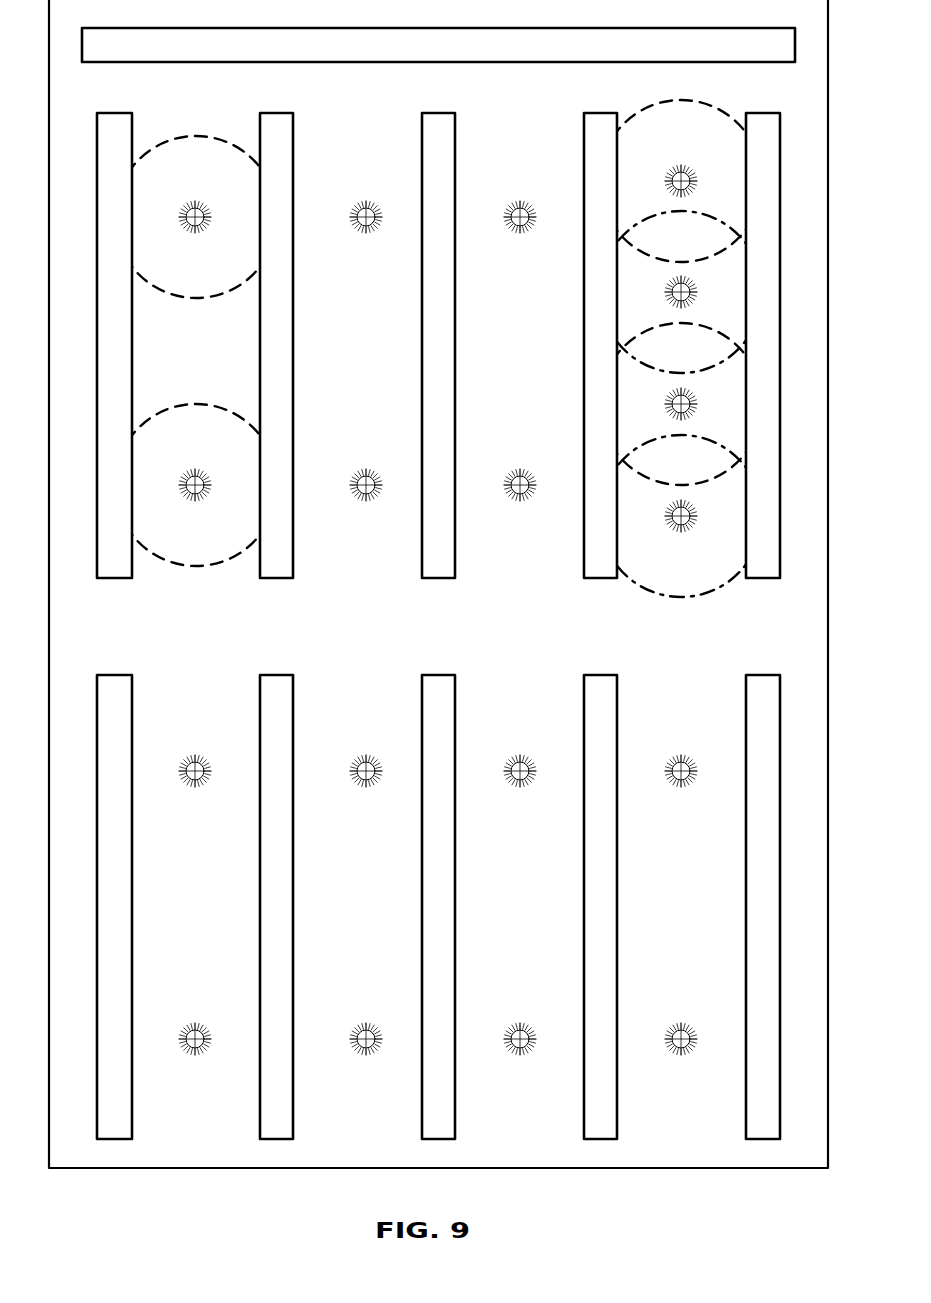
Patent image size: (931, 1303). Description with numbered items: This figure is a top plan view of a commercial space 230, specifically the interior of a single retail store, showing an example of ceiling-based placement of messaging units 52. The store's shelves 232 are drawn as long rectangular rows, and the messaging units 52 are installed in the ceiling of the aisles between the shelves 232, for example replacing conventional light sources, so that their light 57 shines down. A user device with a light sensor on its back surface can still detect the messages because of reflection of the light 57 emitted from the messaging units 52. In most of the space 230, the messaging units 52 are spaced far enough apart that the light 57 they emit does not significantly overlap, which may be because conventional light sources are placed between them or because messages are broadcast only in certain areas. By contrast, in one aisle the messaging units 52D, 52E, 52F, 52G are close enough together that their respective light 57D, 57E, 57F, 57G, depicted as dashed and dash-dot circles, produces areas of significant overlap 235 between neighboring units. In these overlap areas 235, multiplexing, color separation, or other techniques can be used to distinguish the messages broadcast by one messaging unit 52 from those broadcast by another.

The messaging unit 52 is at (195, 210).
The messaging unit 52D is at (664, 181).
The messaging unit 52E is at (664, 292).
The messaging unit 52F is at (664, 404).
The messaging unit 52G is at (664, 518).
The light 57 is at (211, 278).
The light 57D is at (682, 127).
The light 57E is at (632, 312).
The light 57F is at (632, 425).
The light 57G is at (697, 570).
The space 230 is at (456, 636).
The shelves 232 is at (421, 62).
The overlap area 235 is at (699, 251).